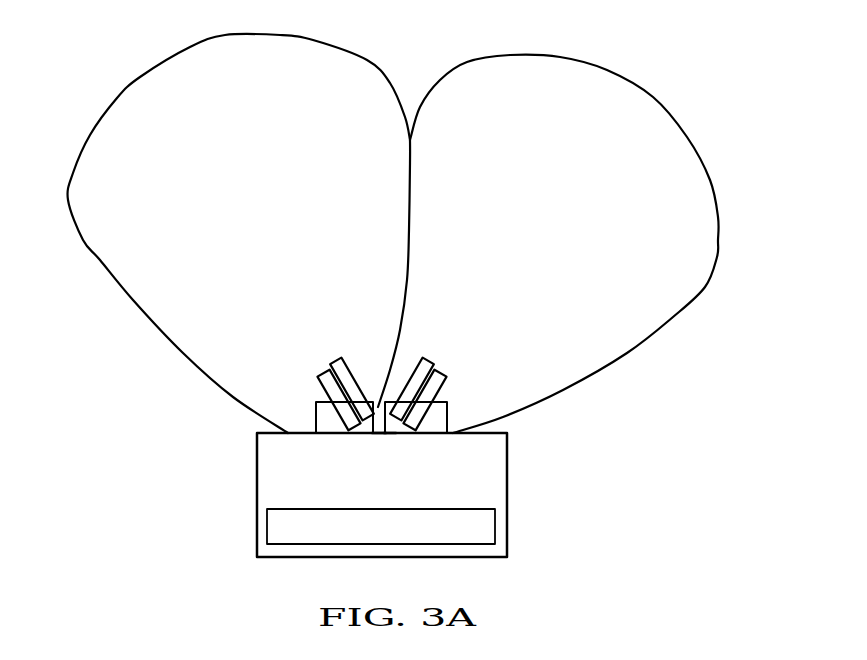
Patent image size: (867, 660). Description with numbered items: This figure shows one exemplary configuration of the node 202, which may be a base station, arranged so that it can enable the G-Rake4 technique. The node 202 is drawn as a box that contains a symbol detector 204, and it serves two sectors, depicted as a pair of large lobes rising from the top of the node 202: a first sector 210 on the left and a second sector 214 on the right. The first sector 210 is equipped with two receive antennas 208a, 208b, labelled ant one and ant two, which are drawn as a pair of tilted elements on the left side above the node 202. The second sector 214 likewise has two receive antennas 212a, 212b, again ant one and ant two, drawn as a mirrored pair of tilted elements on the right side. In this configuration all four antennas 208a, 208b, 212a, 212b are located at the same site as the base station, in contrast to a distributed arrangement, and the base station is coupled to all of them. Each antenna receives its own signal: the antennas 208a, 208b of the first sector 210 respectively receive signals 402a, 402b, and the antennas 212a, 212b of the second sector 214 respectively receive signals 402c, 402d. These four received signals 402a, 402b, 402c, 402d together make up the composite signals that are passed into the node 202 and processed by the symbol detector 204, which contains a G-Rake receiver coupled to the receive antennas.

The node 202 is at (507, 510).
The symbol detector 204 is at (405, 508).
The receive antenna 208a is at (327, 370).
The receive antenna 208b is at (369, 368).
The first sector 210 is at (120, 99).
The receive antenna 212a is at (412, 353).
The receive antenna 212b is at (443, 375).
The second sector 214 is at (660, 100).
The received signal 402a is at (316, 417).
The received signal 402b is at (383, 434).
The received signal 402c is at (388, 434).
The received signal 402d is at (467, 402).